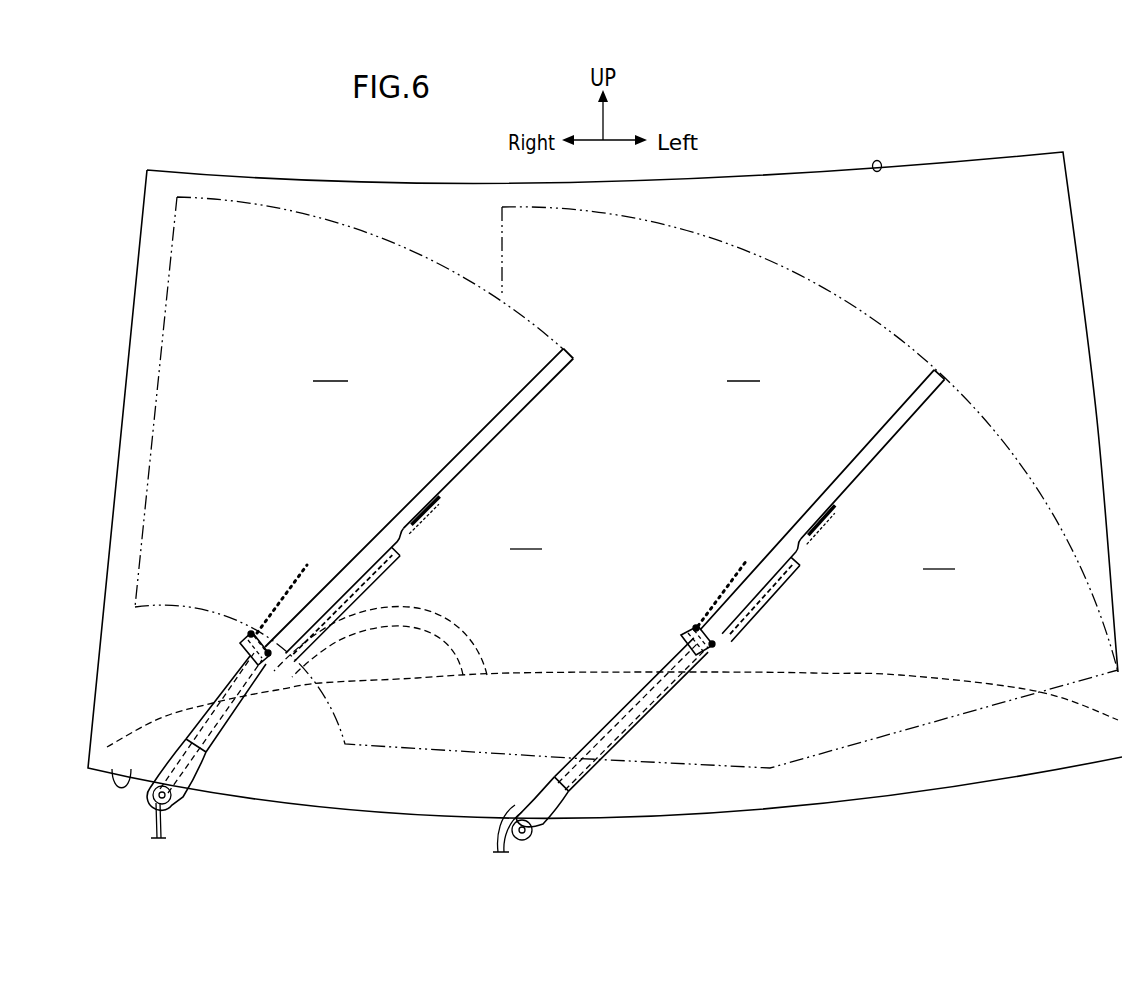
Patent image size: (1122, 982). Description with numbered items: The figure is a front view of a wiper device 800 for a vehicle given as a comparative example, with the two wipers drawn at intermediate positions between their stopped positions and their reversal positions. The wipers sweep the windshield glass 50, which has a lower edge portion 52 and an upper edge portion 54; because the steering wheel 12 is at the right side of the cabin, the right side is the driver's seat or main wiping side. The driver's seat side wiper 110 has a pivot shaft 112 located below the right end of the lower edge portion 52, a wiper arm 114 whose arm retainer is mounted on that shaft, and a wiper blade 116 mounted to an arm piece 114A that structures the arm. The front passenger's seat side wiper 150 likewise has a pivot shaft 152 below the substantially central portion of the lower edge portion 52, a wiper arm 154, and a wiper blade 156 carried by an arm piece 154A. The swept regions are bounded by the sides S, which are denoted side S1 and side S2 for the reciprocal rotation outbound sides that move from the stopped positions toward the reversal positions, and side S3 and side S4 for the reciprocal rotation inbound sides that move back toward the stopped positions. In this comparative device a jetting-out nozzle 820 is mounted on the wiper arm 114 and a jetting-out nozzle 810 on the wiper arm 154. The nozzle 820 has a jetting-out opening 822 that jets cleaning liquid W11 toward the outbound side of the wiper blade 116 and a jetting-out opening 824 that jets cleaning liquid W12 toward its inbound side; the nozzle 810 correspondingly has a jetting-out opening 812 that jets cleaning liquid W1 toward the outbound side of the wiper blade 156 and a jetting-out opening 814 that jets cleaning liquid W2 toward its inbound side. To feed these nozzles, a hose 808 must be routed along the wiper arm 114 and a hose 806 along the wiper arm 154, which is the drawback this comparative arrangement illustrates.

The windshield glass 50 is at (933, 175).
The upper edge portion 54 is at (877, 172).
The lower edge portion 52 is at (133, 771).
The wiper device for a vehicle 800 is at (655, 361).
The wiping region boundary S is at (913, 343).
The reciprocal rotation outbound side S1 is at (330, 368).
The reciprocal rotation outbound side S2 is at (743, 368).
The reciprocal rotation inbound side S3 is at (526, 536).
The reciprocal rotation inbound side S4 is at (939, 556).
The steering wheel 12 is at (457, 632).
The driver's seat side wiper 110 is at (419, 505).
The pivot shaft 112 is at (173, 799).
The wiper arm 114 is at (366, 581).
The arm piece 114A is at (406, 497).
The wiper blade 116 is at (458, 455).
The front passenger's seat side wiper 150 is at (822, 516).
The pivot shaft 152 is at (517, 841).
The wiper arm 154 is at (740, 641).
The arm piece 154A is at (810, 503).
The wiper blade 156 is at (863, 455).
The hose 808 is at (229, 724).
The hose 806 is at (630, 738).
The jetting-out nozzle 820 is at (247, 637).
The jetting-out opening 822 is at (256, 631).
The jetting-out opening 824 is at (284, 685).
The jetting-out nozzle 810 is at (685, 635).
The jetting-out opening 812 is at (694, 626).
The jetting-out opening 814 is at (713, 648).
The cleaning liquid W1 is at (737, 567).
The cleaning liquid W2 is at (768, 618).
The cleaning liquid W11 is at (293, 572).
The cleaning liquid W12 is at (333, 639).